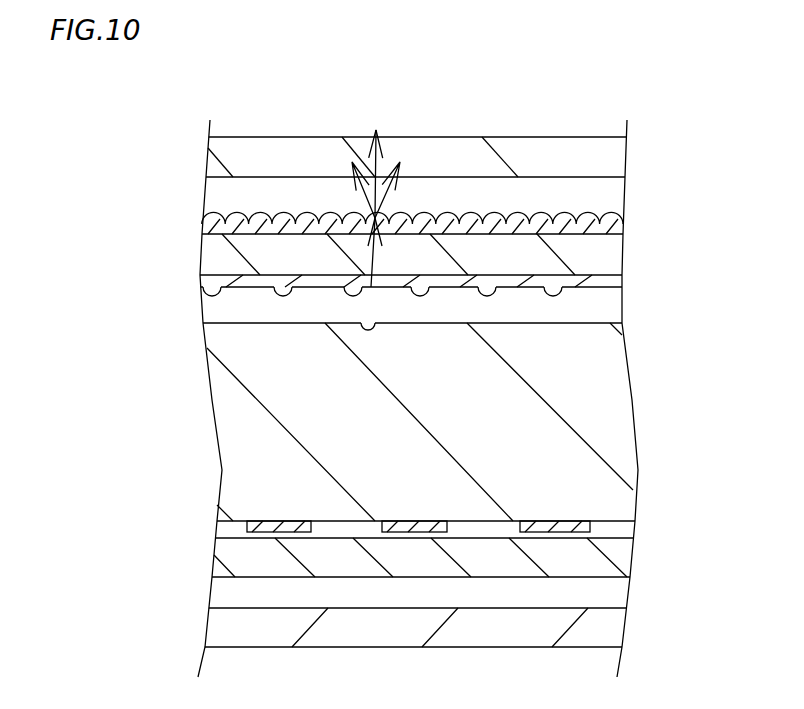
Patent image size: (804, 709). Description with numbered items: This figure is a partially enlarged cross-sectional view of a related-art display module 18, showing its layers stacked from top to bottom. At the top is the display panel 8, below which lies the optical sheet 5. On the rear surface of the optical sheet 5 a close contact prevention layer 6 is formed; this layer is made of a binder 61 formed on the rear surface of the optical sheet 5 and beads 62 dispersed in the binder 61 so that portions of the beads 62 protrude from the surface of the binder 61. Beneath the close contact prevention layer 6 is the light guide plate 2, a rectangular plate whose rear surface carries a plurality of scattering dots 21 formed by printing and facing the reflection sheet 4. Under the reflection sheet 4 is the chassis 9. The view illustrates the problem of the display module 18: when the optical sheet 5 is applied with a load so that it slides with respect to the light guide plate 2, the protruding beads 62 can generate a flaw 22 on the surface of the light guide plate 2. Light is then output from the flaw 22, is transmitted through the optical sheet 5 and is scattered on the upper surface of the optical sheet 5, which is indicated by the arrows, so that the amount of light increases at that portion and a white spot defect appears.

The display module 18 is at (702, 46).
The display panel 8 is at (613, 158).
The optical sheet 5 is at (614, 244).
The binder 61 is at (203, 278).
The beads 62 is at (210, 297).
The close contact prevention layer 6 is at (220, 300).
The light guide plate 2 is at (620, 388).
The scattering dots 21 is at (593, 525).
The flaw 22 is at (373, 327).
The reflection sheet 4 is at (625, 558).
The chassis 9 is at (612, 628).